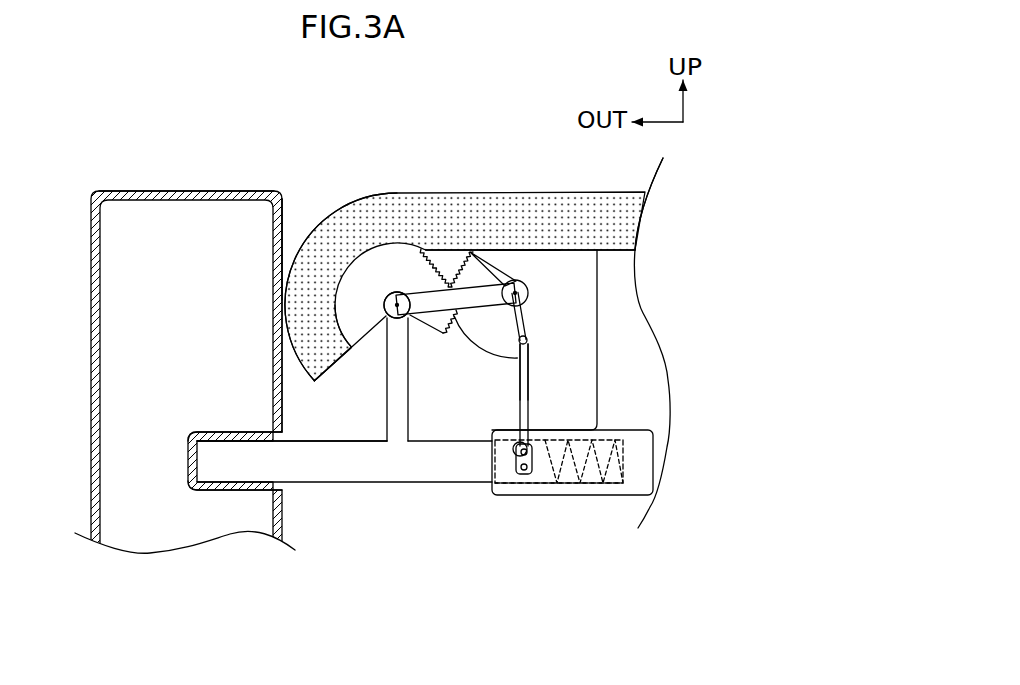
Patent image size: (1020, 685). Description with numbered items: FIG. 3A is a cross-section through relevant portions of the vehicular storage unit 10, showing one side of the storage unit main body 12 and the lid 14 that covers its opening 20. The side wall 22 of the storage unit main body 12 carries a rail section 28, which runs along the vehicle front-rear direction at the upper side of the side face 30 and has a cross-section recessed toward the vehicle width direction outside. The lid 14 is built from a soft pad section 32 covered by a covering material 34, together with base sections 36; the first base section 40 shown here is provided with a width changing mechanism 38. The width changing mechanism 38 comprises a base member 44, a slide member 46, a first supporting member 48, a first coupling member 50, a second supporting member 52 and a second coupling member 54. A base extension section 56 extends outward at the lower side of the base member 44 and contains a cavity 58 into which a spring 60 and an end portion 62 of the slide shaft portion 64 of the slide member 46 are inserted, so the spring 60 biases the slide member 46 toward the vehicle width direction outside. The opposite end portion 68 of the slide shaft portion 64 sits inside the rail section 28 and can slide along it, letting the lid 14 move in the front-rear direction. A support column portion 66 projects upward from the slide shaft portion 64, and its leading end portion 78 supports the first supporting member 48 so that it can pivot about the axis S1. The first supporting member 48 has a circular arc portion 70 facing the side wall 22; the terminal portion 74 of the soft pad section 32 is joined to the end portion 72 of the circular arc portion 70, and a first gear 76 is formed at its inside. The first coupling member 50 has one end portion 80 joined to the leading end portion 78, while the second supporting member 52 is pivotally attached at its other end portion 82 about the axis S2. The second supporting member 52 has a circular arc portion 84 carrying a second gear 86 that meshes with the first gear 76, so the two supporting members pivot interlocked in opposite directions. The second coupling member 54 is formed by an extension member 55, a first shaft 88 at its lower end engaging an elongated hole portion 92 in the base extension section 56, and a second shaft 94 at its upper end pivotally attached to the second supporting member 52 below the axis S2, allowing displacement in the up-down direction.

The vehicular storage unit 10 is at (465, 216).
The storage unit main body 12 is at (158, 191).
The lid 14 is at (622, 178).
The opening 20 is at (290, 352).
The side walls 22 is at (217, 192).
The rail section 28 is at (232, 436).
The side face 30 is at (284, 212).
The soft pad section 32 is at (520, 223).
The covering material 34 is at (411, 198).
The base sections 36 is at (347, 519).
The width changing mechanism 38 is at (502, 262).
The first base sections 40 is at (347, 519).
The base member 44 is at (627, 315).
The slide member 46 is at (370, 488).
The first supporting member 48 is at (371, 333).
The first coupling member 50 is at (440, 308).
The second supporting member 52 is at (535, 311).
The second coupling member 54 is at (532, 393).
The extension member 55 is at (532, 354).
The base extension sections 56 is at (559, 496).
The cavity 58 is at (585, 494).
The spring 60 is at (613, 440).
The end portion 62 is at (545, 483).
The slide shaft portion 64 is at (317, 464).
The support column portion 66 is at (405, 423).
The end portion 68 is at (219, 470).
The circular arc portion 70 is at (338, 270).
The end portion 72 is at (360, 355).
The terminal portion 74 is at (316, 384).
The first gear 76 is at (458, 338).
The leading end portion 78 is at (399, 296).
The one end portion 80 is at (427, 297).
The another end portion 82 is at (486, 275).
The circular arc portion 84 is at (490, 352).
The second gear 86 is at (458, 248).
The first shaft 88 is at (516, 468).
The elongated hole portion 92 is at (534, 440).
The second shaft 94 is at (530, 339).
The axis S1 is at (393, 302).
The axis S2 is at (522, 293).